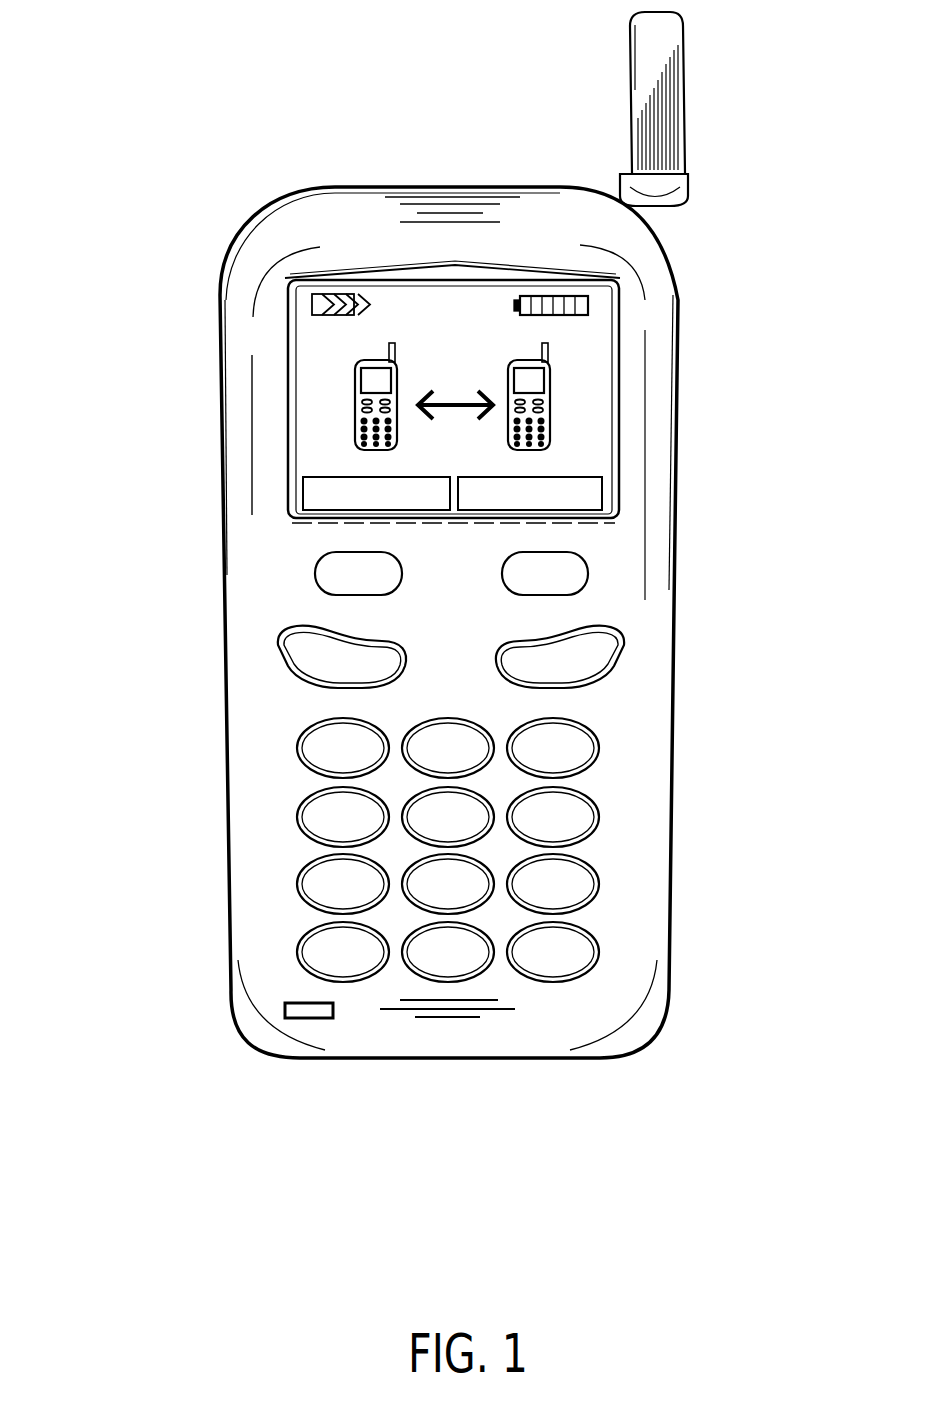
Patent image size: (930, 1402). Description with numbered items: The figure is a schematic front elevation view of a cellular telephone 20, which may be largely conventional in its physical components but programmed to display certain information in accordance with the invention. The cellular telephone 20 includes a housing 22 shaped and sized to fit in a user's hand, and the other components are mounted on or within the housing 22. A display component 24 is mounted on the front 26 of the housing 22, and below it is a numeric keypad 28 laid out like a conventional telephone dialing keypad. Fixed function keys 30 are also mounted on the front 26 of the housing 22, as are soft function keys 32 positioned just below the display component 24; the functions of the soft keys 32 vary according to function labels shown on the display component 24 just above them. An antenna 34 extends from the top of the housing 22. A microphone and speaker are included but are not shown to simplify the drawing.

The cellular telephone 20 is at (135, 98).
The housing 22 is at (678, 343).
The display component 24 is at (620, 432).
The front of the housing 26 is at (347, 245).
The numeric keypad 28 is at (270, 818).
The fixed function keys 30 is at (266, 632).
The soft function keys 32 is at (606, 577).
The antenna 34 is at (681, 114).